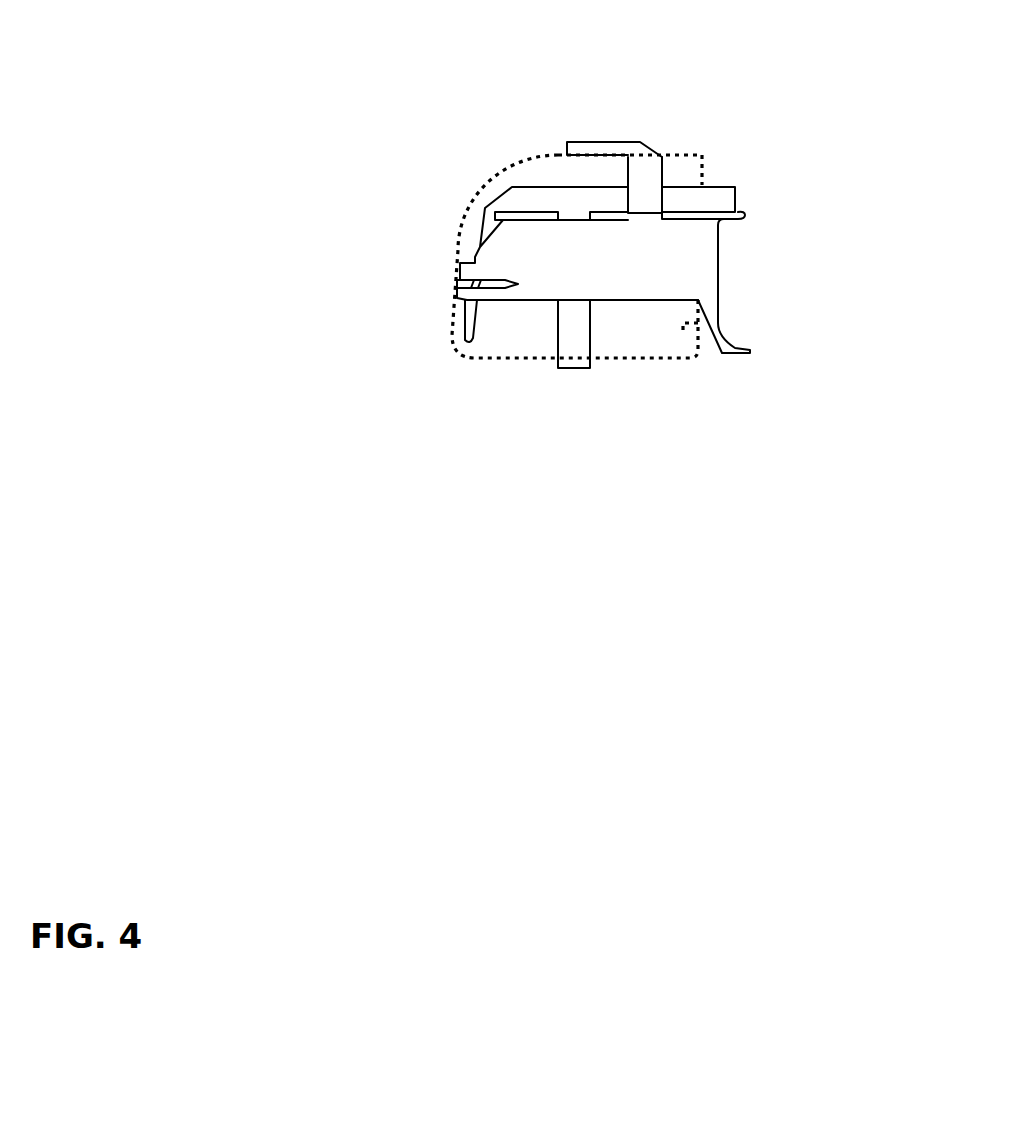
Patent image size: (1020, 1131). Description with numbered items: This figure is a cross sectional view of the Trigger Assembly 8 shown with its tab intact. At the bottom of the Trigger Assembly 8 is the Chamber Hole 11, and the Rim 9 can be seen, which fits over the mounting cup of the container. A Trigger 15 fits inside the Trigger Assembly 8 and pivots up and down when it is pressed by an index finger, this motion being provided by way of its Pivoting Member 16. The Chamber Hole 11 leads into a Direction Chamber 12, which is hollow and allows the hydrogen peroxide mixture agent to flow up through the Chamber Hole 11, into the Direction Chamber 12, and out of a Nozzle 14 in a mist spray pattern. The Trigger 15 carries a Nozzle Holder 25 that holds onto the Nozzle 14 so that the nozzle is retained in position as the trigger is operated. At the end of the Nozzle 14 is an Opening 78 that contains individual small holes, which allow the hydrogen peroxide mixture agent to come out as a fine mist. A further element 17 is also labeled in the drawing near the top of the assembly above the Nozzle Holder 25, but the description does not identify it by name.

The Trigger Assembly 8 is at (462, 345).
The Rim 9 is at (648, 358).
The Chamber Hole 11 is at (572, 368).
The Direction Chamber 12 is at (537, 188).
The Nozzle 14 is at (779, 157).
The Trigger 15 is at (750, 350).
The Pivoting Member 16 is at (457, 283).
The cap 17 is at (622, 142).
The Nozzle Holder 25 is at (660, 175).
The Opening 78 is at (735, 200).